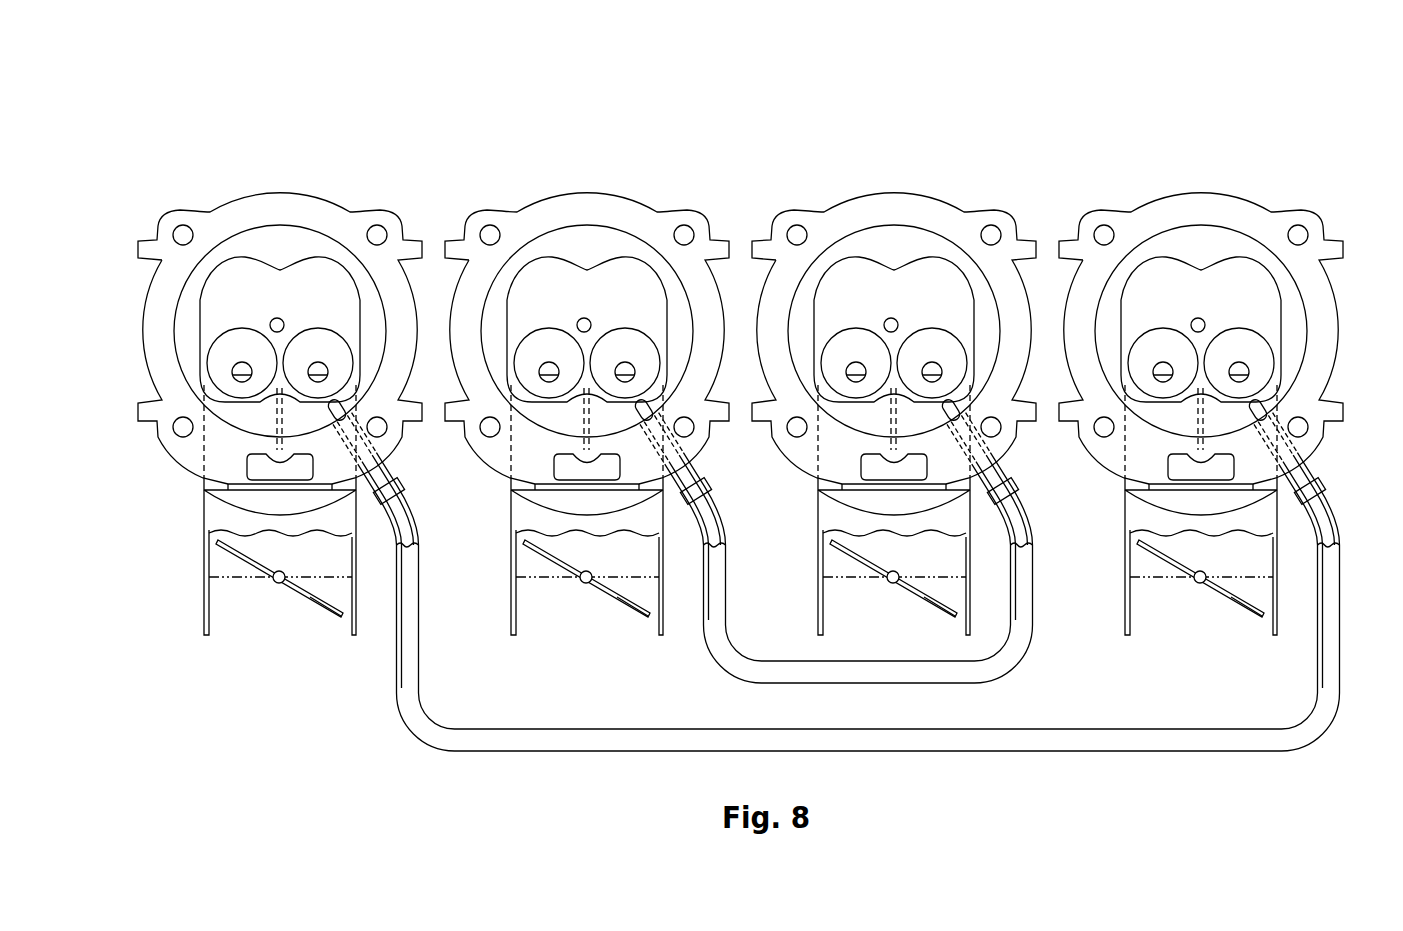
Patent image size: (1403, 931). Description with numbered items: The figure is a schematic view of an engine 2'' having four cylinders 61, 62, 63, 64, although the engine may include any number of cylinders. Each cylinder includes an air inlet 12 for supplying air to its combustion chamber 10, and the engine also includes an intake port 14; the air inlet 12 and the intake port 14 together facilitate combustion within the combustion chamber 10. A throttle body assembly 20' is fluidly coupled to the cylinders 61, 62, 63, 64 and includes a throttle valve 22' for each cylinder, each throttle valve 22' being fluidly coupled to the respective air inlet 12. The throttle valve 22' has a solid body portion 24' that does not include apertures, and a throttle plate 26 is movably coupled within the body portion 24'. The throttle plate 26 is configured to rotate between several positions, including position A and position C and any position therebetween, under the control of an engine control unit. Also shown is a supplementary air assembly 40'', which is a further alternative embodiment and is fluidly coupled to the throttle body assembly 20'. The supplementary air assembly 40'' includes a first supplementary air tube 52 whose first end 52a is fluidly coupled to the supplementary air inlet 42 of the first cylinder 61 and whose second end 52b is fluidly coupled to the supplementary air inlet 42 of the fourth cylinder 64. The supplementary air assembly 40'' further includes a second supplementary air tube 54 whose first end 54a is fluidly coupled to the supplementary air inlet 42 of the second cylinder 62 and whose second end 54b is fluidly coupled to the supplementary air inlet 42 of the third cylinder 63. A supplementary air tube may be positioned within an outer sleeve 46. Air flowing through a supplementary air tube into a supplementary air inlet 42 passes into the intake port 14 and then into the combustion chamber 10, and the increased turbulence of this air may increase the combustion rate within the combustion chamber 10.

The engine 2'' is at (749, 436).
The first cylinder 61 is at (232, 212).
The second cylinder 62 is at (653, 215).
The third cylinder 63 is at (962, 215).
The fourth cylinder 64 is at (1269, 215).
The combustion chamber 10 is at (233, 370).
The intake port 14 is at (297, 340).
The air inlet 12 is at (202, 482).
The throttle body assembly 20' is at (705, 615).
The throttle valve 22' is at (740, 633).
The body portion 24' is at (740, 615).
The throttle plate 26 is at (330, 610).
The supplementary air inlet 42 is at (384, 476).
The first supplementary air tube 52 is at (406, 533).
The first end 52a is at (404, 515).
The second end 52b is at (1327, 517).
The second supplementary air tube 54 is at (704, 533).
The first end 54a is at (711, 515).
The second end 54b is at (1018, 515).
The outer sleeve 46 is at (1034, 565).
The supplementary air assembly 40'' is at (868, 767).
The throttle plate position A is at (240, 582).
The throttle plate position C is at (240, 543).